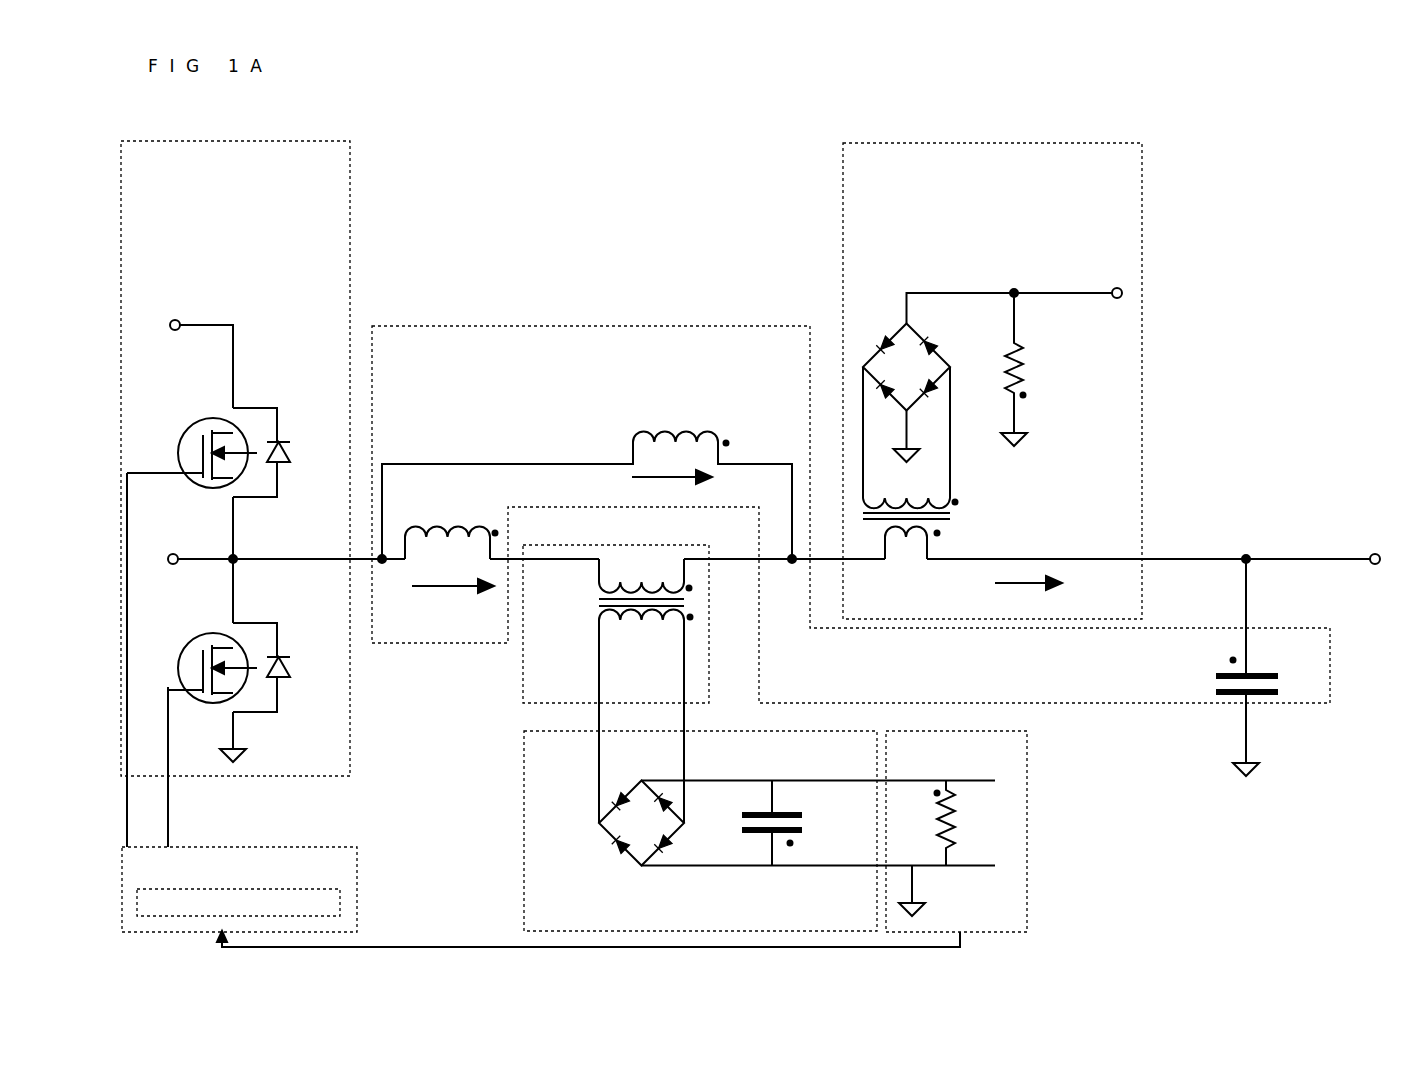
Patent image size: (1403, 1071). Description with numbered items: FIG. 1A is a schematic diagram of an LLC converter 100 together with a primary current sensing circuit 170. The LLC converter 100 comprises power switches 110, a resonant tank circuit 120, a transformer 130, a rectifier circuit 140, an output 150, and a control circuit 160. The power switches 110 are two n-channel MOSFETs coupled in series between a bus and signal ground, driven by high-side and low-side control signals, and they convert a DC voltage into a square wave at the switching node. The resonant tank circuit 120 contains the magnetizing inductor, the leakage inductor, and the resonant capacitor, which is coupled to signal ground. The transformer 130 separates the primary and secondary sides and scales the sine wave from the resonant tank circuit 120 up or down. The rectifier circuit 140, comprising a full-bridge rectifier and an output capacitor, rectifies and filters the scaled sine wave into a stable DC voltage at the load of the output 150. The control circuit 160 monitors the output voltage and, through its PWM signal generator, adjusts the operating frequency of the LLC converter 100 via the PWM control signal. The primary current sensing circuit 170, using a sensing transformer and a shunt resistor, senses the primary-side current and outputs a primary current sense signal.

The LLC converter 100 is at (750, 488).
The power switches 110 is at (235, 458).
The resonant tank circuit 120 is at (851, 551).
The transformer 130 is at (616, 662).
The rectifier circuit 140 is at (759, 831).
The output 150 is at (956, 831).
The control circuit 160 is at (239, 889).
The primary current sensing circuit 170 is at (992, 381).